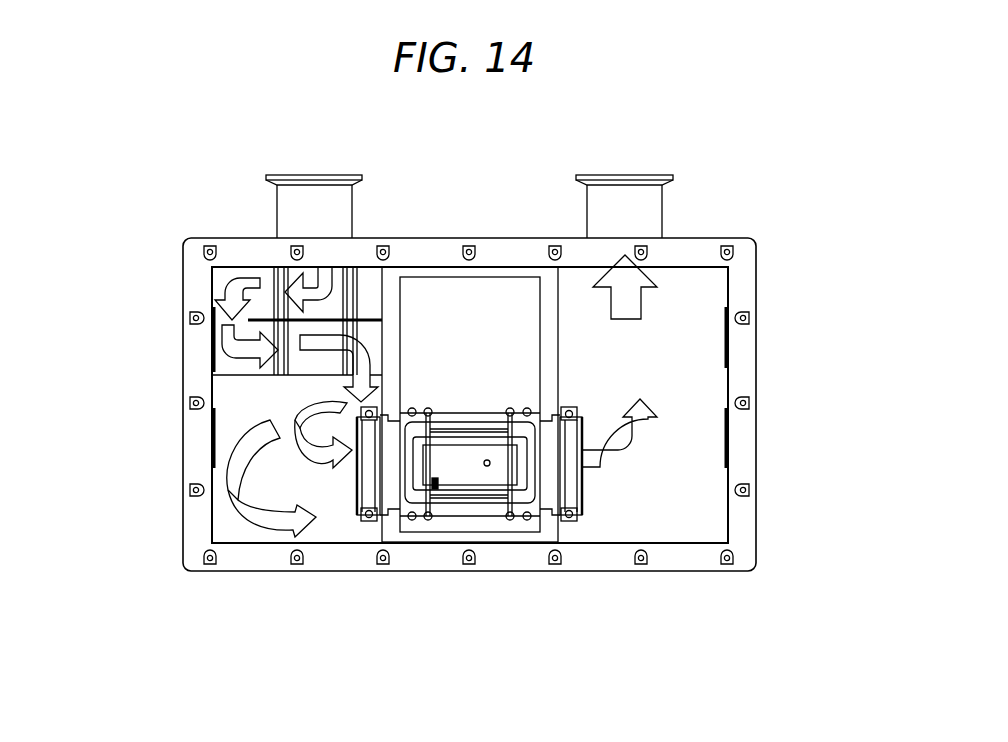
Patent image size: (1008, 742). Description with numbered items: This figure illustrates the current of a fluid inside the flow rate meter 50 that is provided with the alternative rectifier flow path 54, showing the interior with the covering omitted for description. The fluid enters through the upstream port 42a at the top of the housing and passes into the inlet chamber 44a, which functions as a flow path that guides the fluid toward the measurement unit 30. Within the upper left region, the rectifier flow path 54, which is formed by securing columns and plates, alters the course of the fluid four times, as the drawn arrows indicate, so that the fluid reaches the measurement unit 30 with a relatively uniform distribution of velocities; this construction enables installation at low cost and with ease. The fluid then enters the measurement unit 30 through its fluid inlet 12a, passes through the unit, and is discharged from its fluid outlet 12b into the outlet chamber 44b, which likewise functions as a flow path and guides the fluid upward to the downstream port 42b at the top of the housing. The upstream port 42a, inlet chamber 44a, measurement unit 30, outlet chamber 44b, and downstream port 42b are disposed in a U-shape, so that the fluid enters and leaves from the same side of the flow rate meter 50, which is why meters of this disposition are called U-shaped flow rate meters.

The flow rate meter 50 is at (768, 227).
The upstream port 42a is at (322, 175).
The downstream port 42b is at (632, 175).
The rectifier flow path 54 is at (227, 362).
The inlet chamber 44a is at (238, 527).
The outlet chamber 44b is at (686, 510).
The measurement unit 30 is at (451, 517).
The fluid inlet 12a is at (354, 491).
The fluid outlet 12b is at (583, 491).